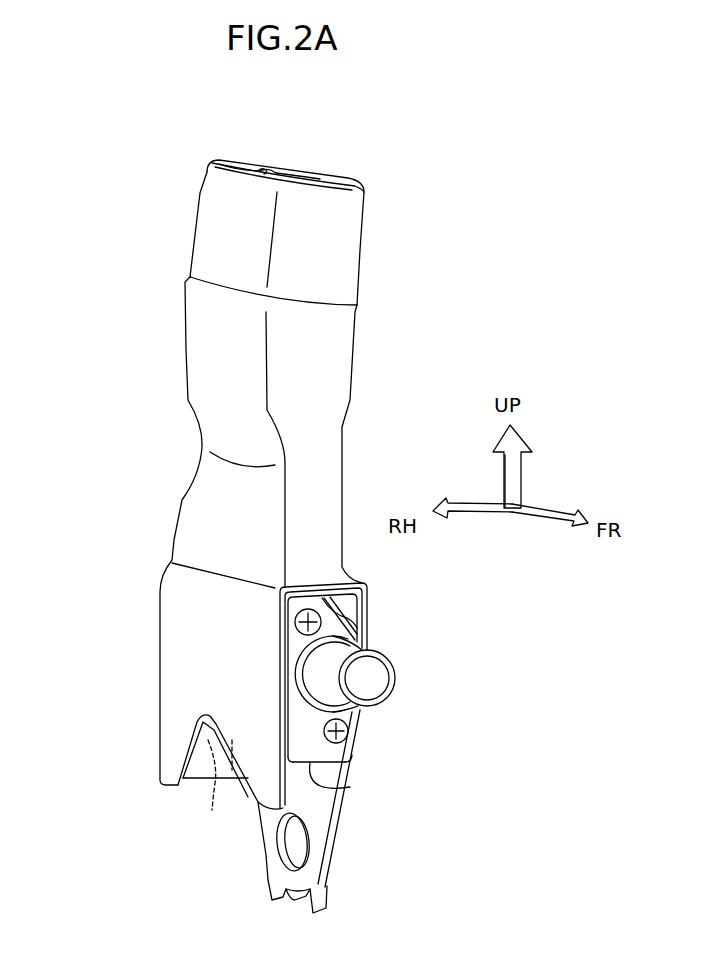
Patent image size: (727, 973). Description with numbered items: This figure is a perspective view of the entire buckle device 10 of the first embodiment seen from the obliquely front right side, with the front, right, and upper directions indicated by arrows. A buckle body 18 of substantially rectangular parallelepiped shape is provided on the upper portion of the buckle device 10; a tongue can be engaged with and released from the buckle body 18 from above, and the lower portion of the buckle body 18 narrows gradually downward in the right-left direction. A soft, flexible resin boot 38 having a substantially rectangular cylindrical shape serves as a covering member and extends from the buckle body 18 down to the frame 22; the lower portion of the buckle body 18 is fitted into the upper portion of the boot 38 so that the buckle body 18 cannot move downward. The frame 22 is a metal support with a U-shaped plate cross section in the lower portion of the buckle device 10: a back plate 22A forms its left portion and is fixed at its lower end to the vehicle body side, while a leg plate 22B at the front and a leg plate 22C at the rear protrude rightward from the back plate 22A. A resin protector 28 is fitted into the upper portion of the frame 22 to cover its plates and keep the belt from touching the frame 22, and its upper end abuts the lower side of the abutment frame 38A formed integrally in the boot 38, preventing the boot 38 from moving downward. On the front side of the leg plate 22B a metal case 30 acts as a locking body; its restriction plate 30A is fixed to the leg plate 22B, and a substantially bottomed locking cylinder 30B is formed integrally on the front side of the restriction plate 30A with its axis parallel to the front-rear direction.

The buckle device 10 is at (76, 253).
The buckle body 18 is at (362, 252).
The boot 38 is at (187, 352).
The protector 28 is at (366, 590).
The abutment frame 38A is at (352, 610).
The case 30 is at (347, 632).
The restriction plate 30A is at (348, 786).
The locking cylinder 30B is at (378, 717).
The frame 22 is at (333, 857).
The back plate 22A is at (267, 853).
The leg plate 22B is at (350, 762).
The leg plate 22C is at (205, 789).